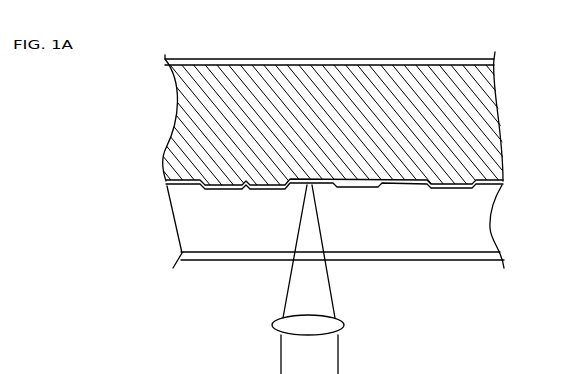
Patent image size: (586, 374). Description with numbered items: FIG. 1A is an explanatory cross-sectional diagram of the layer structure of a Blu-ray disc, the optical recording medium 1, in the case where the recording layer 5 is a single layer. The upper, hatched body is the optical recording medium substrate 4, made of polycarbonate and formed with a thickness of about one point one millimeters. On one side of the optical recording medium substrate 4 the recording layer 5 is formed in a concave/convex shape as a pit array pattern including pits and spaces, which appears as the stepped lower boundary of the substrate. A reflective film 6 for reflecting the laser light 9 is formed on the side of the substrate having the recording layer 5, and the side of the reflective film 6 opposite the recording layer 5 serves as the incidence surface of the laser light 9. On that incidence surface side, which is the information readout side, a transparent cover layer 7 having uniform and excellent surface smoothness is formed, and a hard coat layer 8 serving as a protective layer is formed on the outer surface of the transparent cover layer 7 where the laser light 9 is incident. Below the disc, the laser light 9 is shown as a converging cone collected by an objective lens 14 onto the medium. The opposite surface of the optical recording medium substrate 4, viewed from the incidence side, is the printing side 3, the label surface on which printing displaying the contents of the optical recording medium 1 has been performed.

The optical recording medium 1 is at (310, 58).
The printing side 3 is at (448, 57).
The optical recording medium substrate 4 is at (498, 120).
The recording layer 5 is at (338, 226).
The reflective film 6 is at (503, 186).
The transparent cover layer 7 is at (469, 232).
The hard coat layer 8 is at (505, 258).
The laser light 9 is at (335, 292).
The objective lens 14 is at (343, 337).